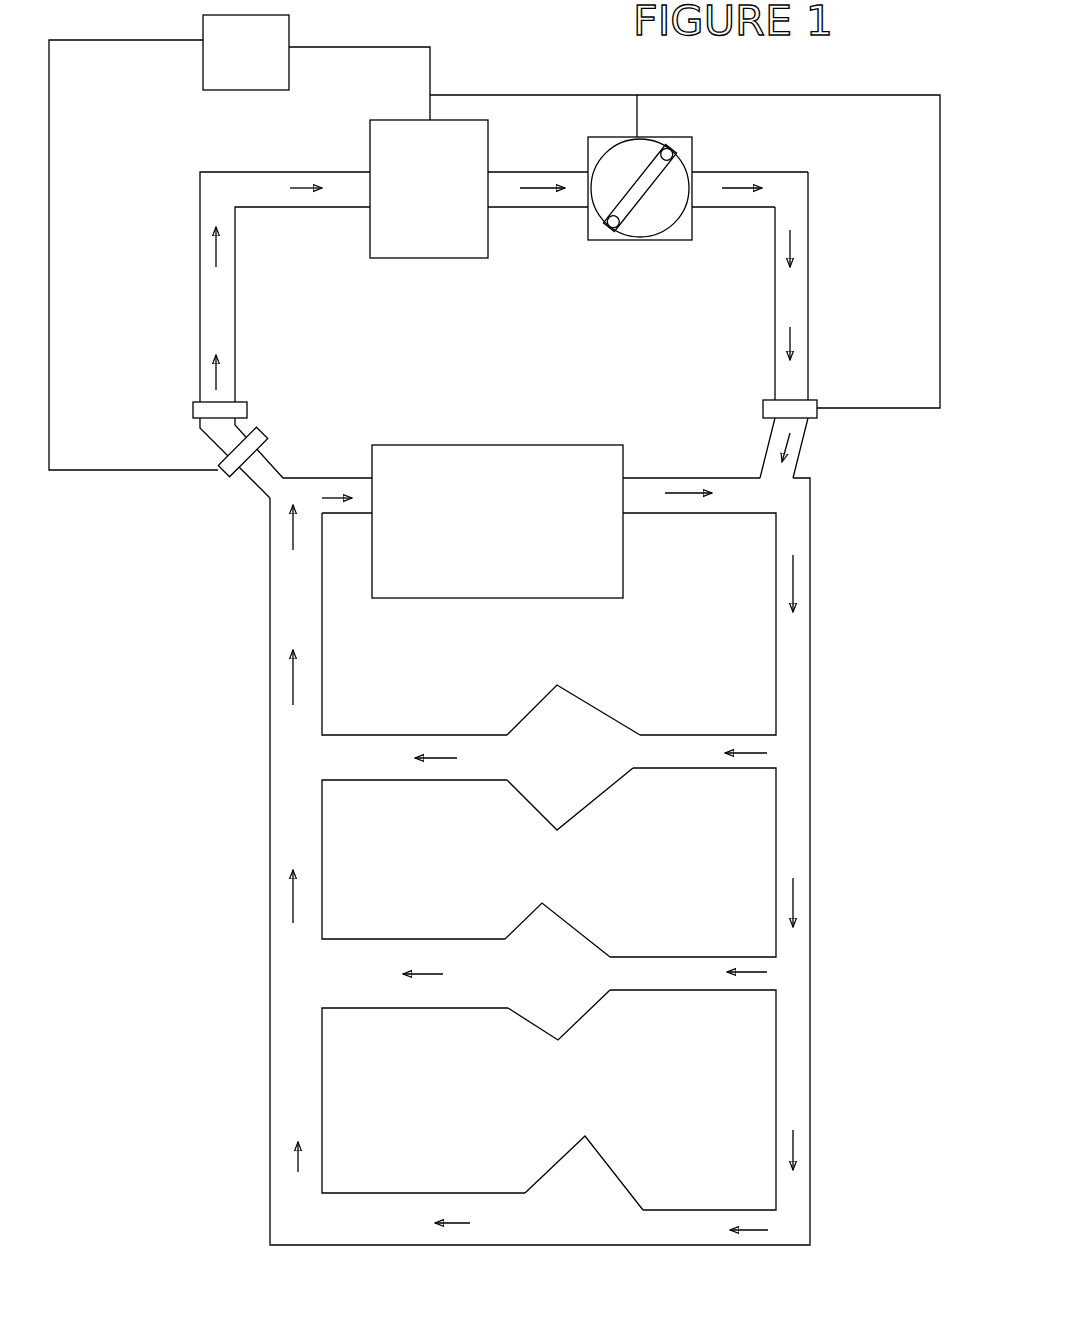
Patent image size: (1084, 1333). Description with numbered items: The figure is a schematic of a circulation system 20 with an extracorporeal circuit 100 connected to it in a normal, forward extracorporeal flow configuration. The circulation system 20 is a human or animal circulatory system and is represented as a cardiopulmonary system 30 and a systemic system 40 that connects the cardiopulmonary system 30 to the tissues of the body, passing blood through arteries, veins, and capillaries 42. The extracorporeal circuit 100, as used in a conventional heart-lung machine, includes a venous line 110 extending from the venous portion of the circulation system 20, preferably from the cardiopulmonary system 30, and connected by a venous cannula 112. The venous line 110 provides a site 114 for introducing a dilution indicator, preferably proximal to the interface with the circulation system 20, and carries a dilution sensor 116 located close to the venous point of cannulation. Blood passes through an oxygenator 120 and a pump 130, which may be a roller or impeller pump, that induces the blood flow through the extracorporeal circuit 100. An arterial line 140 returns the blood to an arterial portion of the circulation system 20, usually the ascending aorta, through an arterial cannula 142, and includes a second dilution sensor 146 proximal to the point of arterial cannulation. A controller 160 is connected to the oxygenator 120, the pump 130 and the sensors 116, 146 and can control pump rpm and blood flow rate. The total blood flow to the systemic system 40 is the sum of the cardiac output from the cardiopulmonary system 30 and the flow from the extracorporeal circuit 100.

The circulation system 20 is at (255, 722).
The cardiopulmonary system 30 is at (470, 536).
The systemic system 40 is at (812, 853).
The capillaries 42 is at (535, 771).
The extracorporeal circuit 100 is at (808, 213).
The venous line 110 is at (200, 323).
The venous cannula 112 is at (262, 490).
The introduction site 114 is at (193, 402).
The dilution sensor 116 is at (218, 460).
The oxygenator 120 is at (445, 199).
The pump 130 is at (633, 240).
The arterial line 140 is at (810, 302).
The arterial cannula 142 is at (793, 478).
The dilution sensor 146 is at (820, 398).
The controller 160 is at (263, 54).